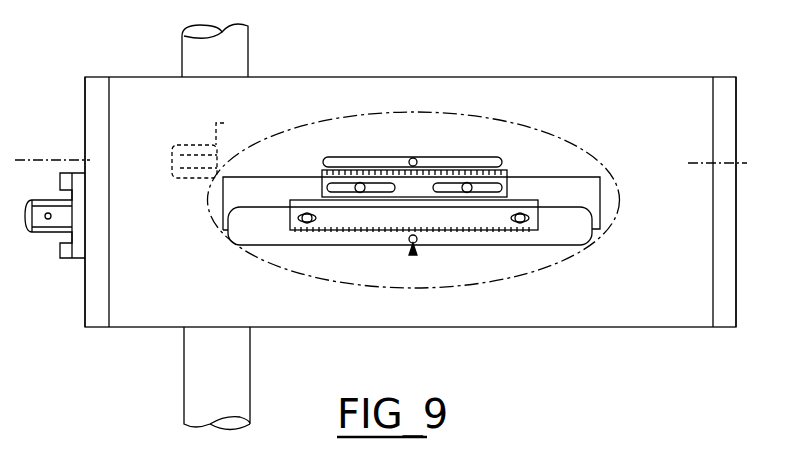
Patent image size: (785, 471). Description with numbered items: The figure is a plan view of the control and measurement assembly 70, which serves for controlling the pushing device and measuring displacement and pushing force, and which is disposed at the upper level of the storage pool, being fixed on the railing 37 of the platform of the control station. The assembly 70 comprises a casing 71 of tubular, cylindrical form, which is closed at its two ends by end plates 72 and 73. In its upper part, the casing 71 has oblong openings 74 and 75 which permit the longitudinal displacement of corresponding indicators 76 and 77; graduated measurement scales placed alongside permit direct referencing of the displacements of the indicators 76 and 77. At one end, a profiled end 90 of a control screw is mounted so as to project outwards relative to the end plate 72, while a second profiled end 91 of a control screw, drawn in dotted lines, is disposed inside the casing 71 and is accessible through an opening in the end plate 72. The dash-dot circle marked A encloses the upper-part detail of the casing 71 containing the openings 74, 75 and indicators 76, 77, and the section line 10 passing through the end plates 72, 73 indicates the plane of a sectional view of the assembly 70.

The section line 10- 10 is at (21, 200).
The railing 37 is at (236, 52).
The control and measurement assembly 70 is at (515, 63).
The casing 71 is at (615, 318).
The end plate 72 is at (99, 316).
The end plate 73 is at (722, 318).
The oblong opening 74 is at (572, 235).
The oblong opening 75 is at (478, 163).
The indicator 76 is at (413, 158).
The indicator 77 is at (408, 246).
The profiled end of a control screw 90 is at (48, 213).
The second profiled end of a control screw 91 is at (193, 154).
The detail region A is at (566, 258).